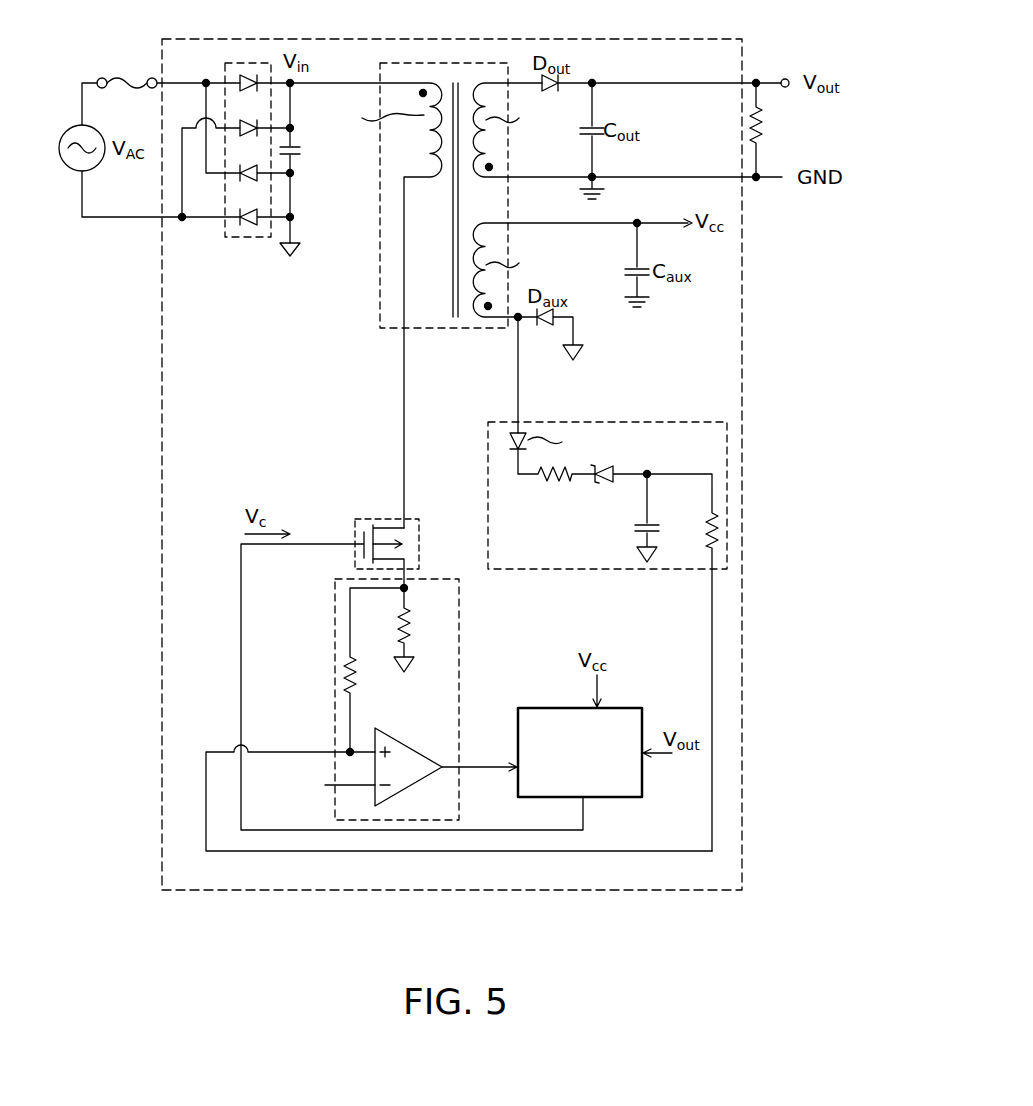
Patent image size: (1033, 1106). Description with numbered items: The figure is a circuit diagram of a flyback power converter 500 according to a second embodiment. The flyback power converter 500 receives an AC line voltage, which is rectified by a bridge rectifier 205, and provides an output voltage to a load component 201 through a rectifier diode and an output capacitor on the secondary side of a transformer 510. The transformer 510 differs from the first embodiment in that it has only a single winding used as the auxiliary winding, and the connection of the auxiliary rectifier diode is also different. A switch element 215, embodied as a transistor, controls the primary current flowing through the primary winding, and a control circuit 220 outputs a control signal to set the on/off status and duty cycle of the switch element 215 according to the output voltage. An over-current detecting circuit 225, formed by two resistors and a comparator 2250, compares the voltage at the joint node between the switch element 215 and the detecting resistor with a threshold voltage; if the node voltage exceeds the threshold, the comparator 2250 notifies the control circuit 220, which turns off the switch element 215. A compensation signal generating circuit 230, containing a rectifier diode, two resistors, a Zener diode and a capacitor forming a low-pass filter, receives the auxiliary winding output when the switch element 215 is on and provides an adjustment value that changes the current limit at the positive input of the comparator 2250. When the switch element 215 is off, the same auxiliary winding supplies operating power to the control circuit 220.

The flyback power converter 500 is at (160, 500).
The bridge rectifier 205 is at (256, 63).
The transformer 510 is at (445, 63).
The load component 201 is at (765, 140).
The compensation signal generating circuit 230 is at (636, 420).
The switch element 215 is at (385, 519).
The over-current detecting circuit 225 is at (459, 715).
The comparator 2250 is at (438, 736).
The control circuit 220 is at (553, 708).